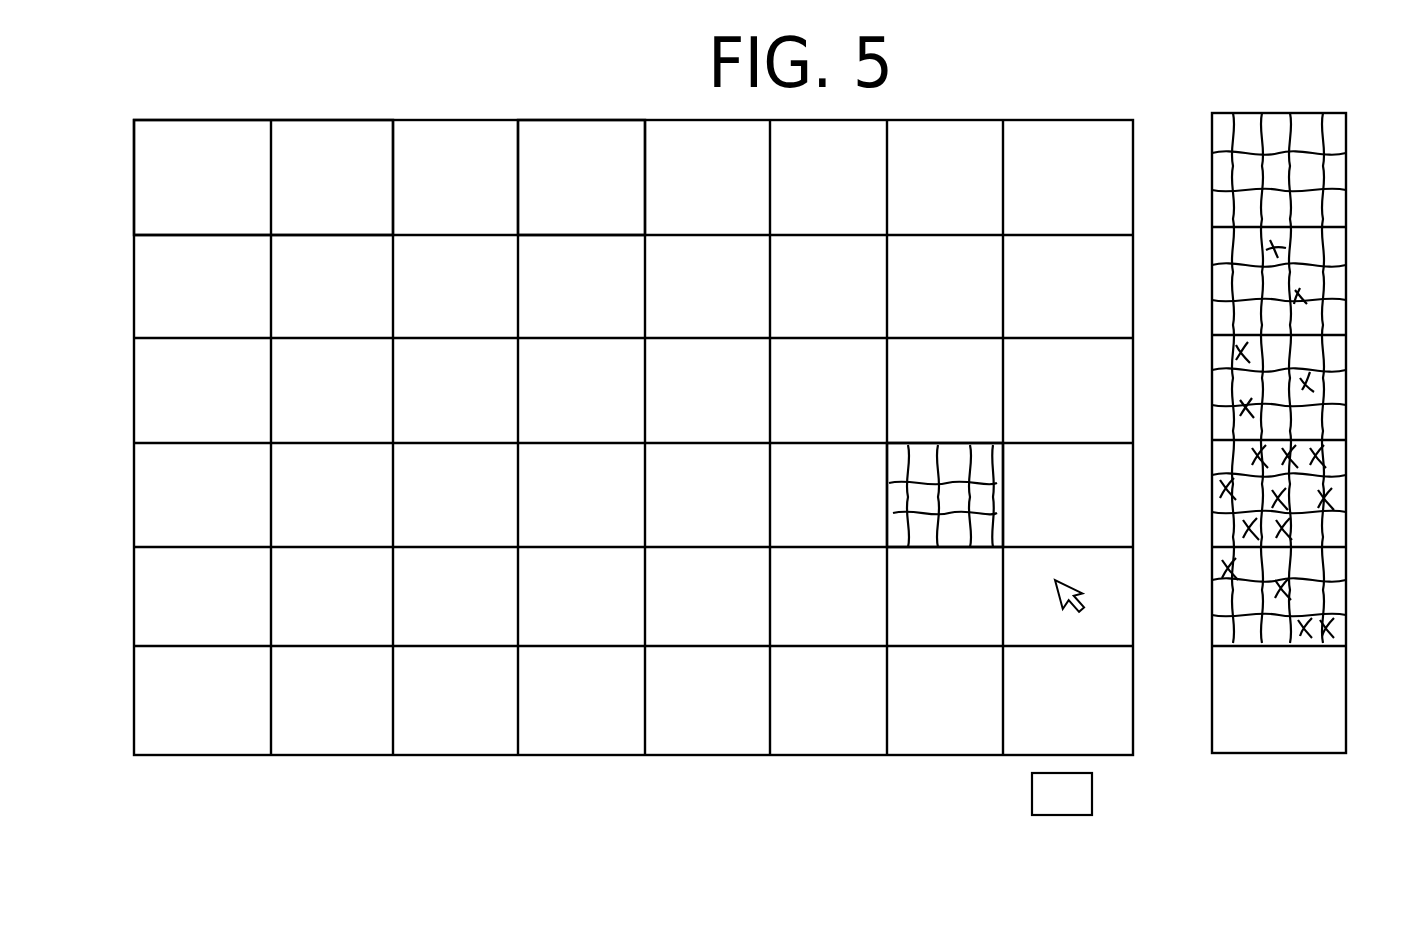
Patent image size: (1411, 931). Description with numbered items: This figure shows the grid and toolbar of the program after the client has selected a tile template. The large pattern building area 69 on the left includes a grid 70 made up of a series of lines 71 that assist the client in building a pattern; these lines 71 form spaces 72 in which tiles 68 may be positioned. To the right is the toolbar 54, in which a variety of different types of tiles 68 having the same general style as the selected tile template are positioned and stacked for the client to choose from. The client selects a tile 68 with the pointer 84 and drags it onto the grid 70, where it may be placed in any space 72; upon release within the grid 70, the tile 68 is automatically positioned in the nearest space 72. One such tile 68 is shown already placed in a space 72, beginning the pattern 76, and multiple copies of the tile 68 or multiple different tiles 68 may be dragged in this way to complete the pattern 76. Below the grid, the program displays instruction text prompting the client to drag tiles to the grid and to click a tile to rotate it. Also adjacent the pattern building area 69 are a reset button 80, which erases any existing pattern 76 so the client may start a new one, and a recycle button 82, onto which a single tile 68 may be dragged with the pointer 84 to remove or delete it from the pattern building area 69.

The toolbar 54 is at (1266, 768).
The tile 68 is at (946, 461).
The pattern building area 69 is at (520, 810).
The grid 70 is at (465, 100).
The lines 71 is at (195, 232).
The space 72 is at (558, 155).
The pattern 76 is at (862, 428).
The reset button 80 is at (951, 856).
The recycle button 82 is at (1078, 800).
The pointer 84 is at (1070, 594).